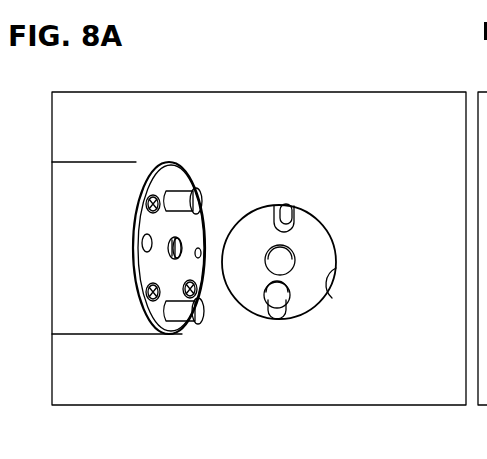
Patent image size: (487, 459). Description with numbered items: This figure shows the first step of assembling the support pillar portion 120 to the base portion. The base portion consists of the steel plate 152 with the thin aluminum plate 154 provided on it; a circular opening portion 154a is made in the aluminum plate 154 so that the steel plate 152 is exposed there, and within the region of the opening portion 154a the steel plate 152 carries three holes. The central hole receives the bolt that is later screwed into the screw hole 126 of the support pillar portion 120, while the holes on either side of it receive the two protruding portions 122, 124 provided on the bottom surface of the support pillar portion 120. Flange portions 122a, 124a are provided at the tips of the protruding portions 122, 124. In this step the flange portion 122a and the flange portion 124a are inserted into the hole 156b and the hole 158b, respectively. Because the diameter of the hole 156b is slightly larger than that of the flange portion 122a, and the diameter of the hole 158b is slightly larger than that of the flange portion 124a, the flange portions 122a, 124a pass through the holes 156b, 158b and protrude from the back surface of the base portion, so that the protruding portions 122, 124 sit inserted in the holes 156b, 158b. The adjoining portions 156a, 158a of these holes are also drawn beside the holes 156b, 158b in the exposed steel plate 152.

The support pillar portion 120 is at (66, 310).
The protruding portion 122 is at (177, 313).
The flange portion 122a is at (198, 319).
The protruding portion 124 is at (172, 195).
The flange portion 124a is at (197, 200).
The screw hole 126 is at (170, 251).
The steel plate 152 is at (250, 225).
The aluminum plate 154 is at (297, 257).
The opening portion 154a is at (326, 287).
The lower hole outer portion 156a is at (283, 318).
The hole 156b is at (273, 290).
The upper hole outer portion 158a is at (288, 215).
The hole 158b is at (285, 205).